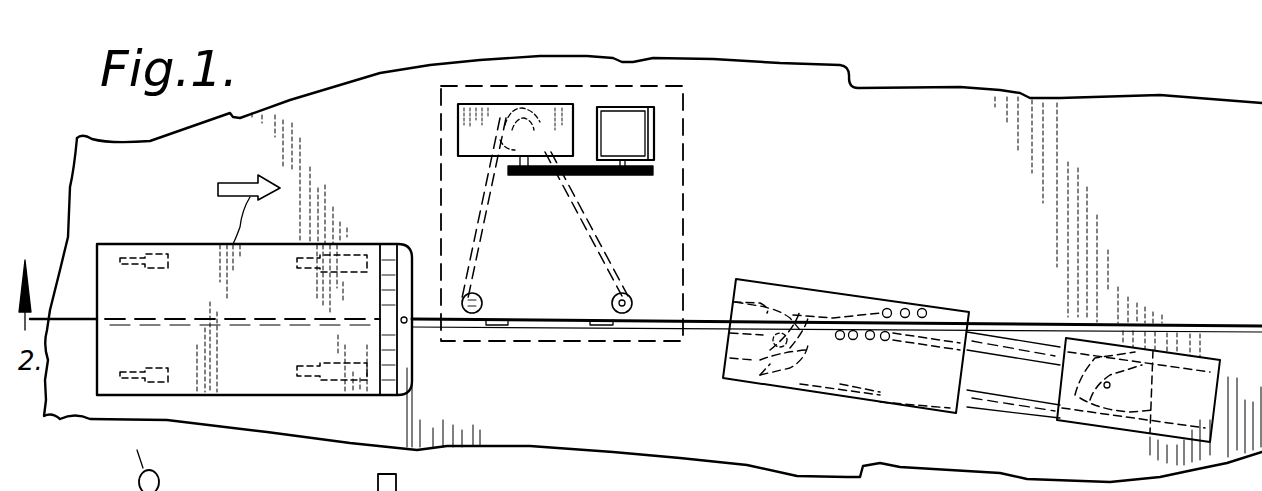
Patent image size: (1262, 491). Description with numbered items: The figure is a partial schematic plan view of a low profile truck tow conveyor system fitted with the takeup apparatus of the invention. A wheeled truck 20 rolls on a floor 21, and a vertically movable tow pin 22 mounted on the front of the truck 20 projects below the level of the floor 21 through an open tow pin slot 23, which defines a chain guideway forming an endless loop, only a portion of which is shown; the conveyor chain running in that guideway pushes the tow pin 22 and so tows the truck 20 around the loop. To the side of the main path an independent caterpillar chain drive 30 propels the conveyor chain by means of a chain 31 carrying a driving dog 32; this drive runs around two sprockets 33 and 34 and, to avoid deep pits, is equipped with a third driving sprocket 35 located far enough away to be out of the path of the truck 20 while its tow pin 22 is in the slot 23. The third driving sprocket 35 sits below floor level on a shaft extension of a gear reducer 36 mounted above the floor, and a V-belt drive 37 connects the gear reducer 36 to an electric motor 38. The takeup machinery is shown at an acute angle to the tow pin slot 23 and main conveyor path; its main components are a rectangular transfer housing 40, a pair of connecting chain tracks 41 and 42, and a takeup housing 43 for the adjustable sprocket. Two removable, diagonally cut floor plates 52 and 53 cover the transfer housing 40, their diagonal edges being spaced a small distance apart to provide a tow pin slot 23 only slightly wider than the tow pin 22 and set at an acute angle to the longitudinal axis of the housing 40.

The wheeled truck 20 is at (355, 397).
The floor 21 is at (644, 419).
The tow pin 22 is at (413, 328).
The tow pin slot 23 is at (1197, 290).
The caterpillar chain drive 30 is at (700, 233).
The chain 31 is at (477, 205).
The driving dog 32 is at (612, 257).
The sprocket 33 is at (482, 294).
The sprocket 34 is at (608, 300).
The third driving sprocket 35 is at (467, 145).
The gear reducer 36 is at (458, 113).
The V-belt drive 37 is at (606, 178).
The electric motor 38 is at (655, 143).
The transfer housing 40 is at (873, 409).
The connecting chain track 41 is at (1027, 341).
The connecting chain track 42 is at (972, 408).
The takeup housing 43 is at (1130, 437).
The floor plate 52 is at (843, 268).
The floor plate 53 is at (790, 380).